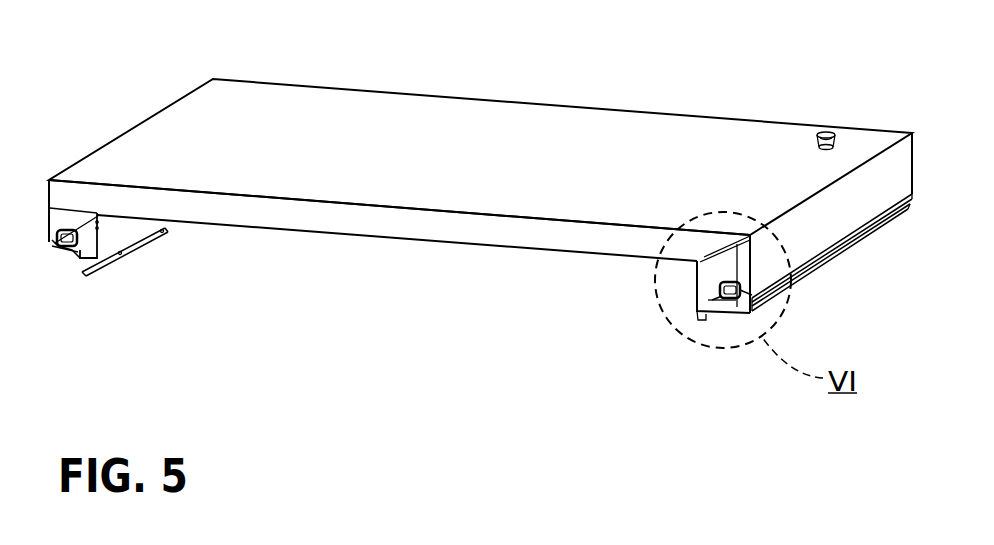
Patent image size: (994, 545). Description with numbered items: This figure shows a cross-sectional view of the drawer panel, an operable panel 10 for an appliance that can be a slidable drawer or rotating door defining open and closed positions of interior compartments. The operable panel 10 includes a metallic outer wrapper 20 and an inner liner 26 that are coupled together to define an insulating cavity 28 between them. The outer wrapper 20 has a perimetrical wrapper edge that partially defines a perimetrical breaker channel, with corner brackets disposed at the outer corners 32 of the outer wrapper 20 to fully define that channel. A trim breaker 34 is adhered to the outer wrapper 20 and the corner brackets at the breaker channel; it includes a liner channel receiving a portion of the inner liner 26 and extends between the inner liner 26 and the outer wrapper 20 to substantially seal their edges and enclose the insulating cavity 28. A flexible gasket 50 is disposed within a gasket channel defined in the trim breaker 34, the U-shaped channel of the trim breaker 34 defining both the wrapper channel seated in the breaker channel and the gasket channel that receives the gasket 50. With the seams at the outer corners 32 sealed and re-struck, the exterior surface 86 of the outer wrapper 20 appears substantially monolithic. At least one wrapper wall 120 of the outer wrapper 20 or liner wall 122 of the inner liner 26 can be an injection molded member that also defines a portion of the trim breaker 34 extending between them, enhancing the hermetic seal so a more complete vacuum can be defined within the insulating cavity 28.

The operable panel 10 is at (452, 81).
The metallic outer wrapper 20 is at (611, 137).
The inner liner 26 is at (263, 229).
The insulating cavity 28 is at (348, 218).
The outer corners 32 is at (913, 158).
The trim breaker 34 is at (99, 254).
The flexible gasket 50 is at (63, 256).
The exterior surface 86 is at (438, 170).
The wrapper wall 120 is at (828, 213).
The liner wall 122 is at (498, 249).